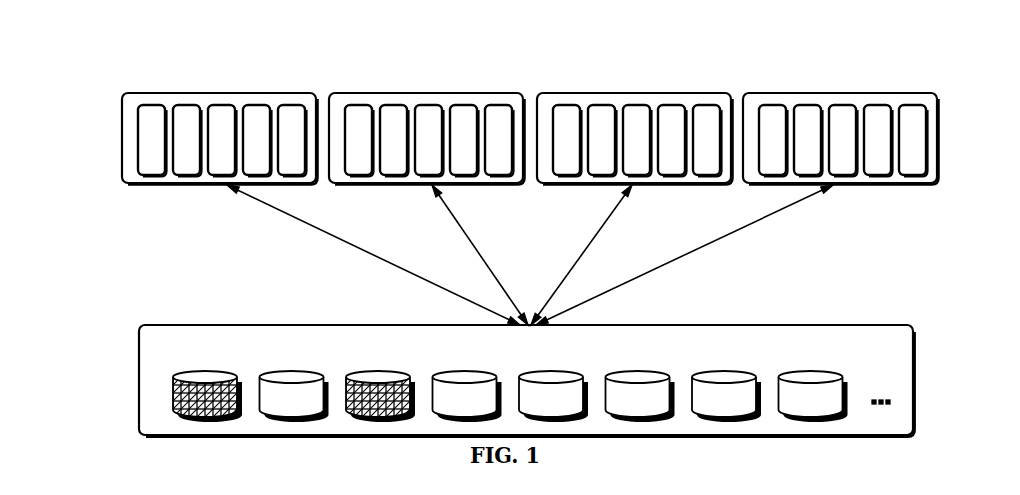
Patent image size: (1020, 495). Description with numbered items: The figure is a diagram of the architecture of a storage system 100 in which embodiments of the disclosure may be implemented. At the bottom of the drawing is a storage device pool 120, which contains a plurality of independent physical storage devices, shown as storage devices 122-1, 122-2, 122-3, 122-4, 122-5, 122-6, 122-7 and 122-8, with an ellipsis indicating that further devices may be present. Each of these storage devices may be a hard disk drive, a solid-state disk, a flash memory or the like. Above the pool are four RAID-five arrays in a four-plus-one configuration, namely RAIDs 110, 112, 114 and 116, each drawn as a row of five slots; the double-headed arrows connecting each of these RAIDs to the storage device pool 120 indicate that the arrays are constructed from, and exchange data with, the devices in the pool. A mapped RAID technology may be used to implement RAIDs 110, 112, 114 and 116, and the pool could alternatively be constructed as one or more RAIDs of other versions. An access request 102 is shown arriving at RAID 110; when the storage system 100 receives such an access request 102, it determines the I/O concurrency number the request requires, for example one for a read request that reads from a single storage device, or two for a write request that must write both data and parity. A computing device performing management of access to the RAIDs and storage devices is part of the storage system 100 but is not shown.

The storage system 100 is at (120, 37).
The access request 102 is at (218, 93).
The RAID 110 is at (233, 92).
The RAID 112 is at (479, 93).
The RAID 114 is at (687, 93).
The RAID 116 is at (893, 93).
The storage device pool 120 is at (529, 369).
The storage device 122-1 is at (203, 372).
The storage device 122-2 is at (290, 372).
The storage device 122-3 is at (376, 372).
The storage device 122-4 is at (462, 372).
The storage device 122-5 is at (549, 372).
The storage device 122-6 is at (636, 372).
The storage device 122-7 is at (722, 372).
The storage device 122-8 is at (808, 372).